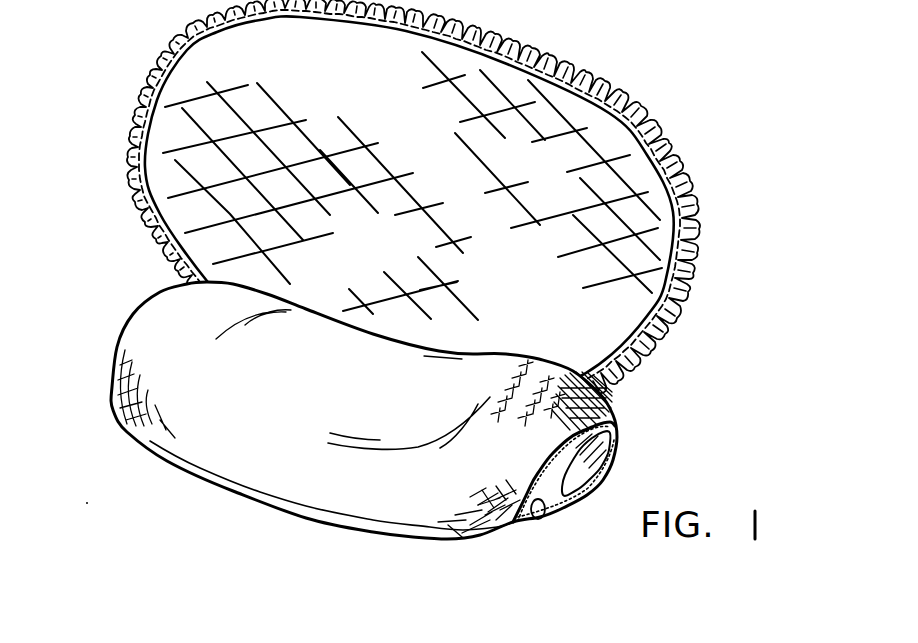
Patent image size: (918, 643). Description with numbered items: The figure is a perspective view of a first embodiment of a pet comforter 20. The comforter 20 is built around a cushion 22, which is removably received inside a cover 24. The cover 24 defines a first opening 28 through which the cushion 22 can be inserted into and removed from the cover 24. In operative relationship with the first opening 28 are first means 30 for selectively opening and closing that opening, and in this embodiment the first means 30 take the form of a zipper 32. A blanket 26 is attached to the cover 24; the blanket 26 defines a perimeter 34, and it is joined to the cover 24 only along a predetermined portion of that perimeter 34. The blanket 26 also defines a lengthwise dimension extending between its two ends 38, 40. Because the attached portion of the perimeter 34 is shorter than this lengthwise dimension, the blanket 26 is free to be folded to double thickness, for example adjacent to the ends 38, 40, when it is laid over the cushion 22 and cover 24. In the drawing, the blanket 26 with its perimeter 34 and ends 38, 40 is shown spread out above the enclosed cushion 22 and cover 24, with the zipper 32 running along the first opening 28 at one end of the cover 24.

The pet comforter 20 is at (434, 299).
The cushion 22 is at (552, 478).
The cover 24 is at (459, 514).
The blanket 26 is at (577, 143).
The first opening 28 is at (532, 517).
The first means 30 is at (535, 497).
The zipper 32 is at (608, 467).
The perimeter 34 is at (134, 91).
The end 38 is at (152, 62).
The end 40 is at (677, 330).